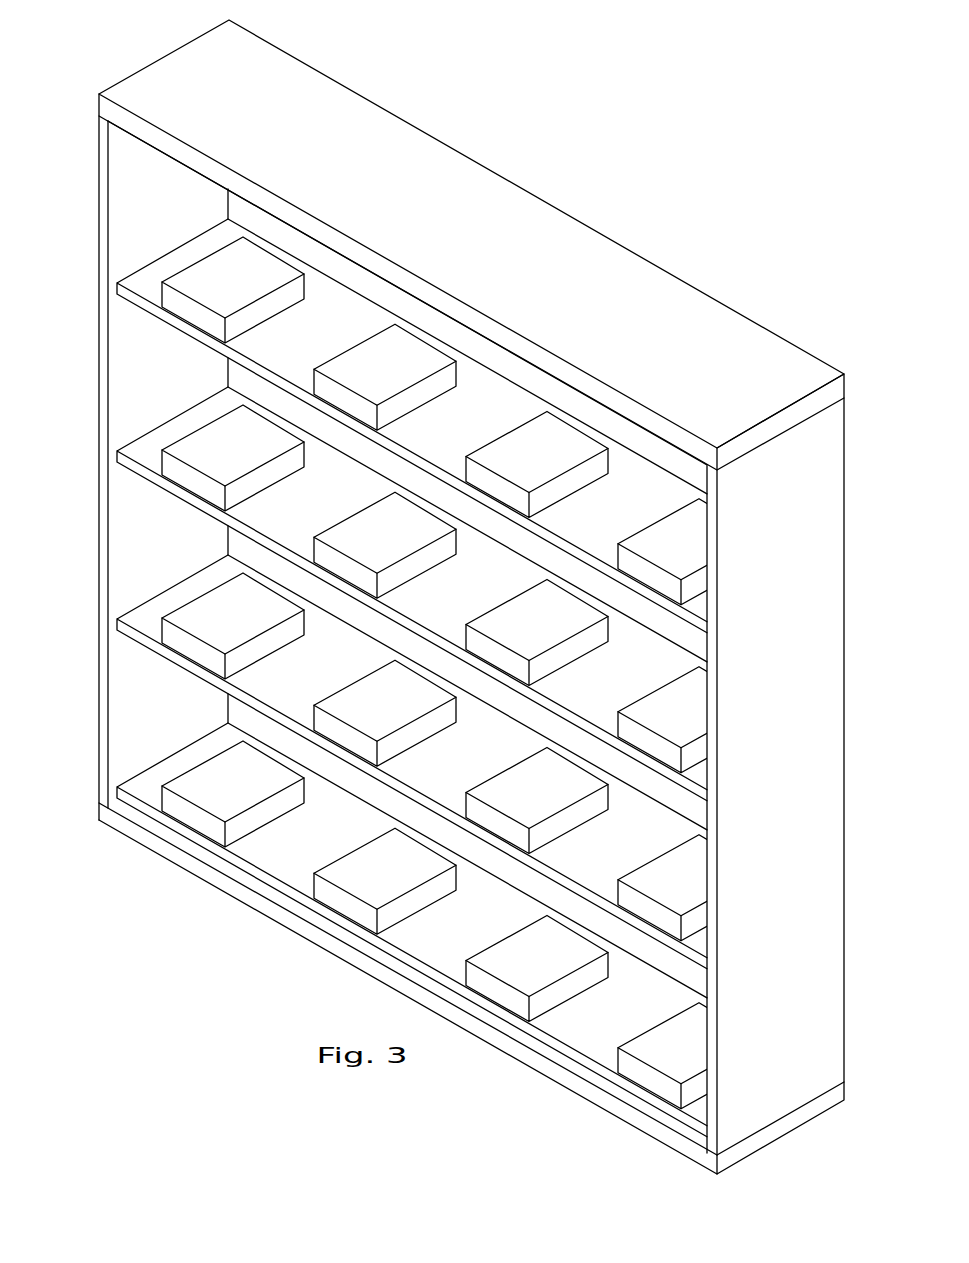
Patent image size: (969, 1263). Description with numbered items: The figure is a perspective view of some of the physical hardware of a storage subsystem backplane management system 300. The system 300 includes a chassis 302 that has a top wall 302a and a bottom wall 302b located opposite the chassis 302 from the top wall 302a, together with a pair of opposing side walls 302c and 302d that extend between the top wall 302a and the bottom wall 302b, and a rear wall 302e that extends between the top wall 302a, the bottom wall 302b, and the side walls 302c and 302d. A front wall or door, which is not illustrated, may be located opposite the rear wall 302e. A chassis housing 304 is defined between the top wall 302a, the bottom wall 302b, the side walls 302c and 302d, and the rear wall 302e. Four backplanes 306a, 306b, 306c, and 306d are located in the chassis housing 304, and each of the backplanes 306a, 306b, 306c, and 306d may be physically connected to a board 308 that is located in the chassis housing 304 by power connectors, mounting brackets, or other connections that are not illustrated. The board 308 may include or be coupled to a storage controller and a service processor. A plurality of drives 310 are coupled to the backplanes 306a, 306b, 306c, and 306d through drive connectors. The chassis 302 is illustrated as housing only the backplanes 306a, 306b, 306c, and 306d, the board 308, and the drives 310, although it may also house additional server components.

The storage subsystem backplane management system 300 is at (681, 87).
The chassis 302 is at (161, 52).
The top wall 302a is at (545, 212).
The bottom wall 302b is at (217, 878).
The side wall 302c is at (762, 755).
The side wall 302d is at (120, 497).
The rear wall 302e is at (793, 345).
The chassis housing 304 is at (196, 357).
The backplane 306a is at (181, 256).
The backplane 306b is at (181, 424).
The backplane 306c is at (180, 594).
The backplane 306d is at (181, 761).
The board 308 is at (363, 283).
The drives 310 is at (213, 291).